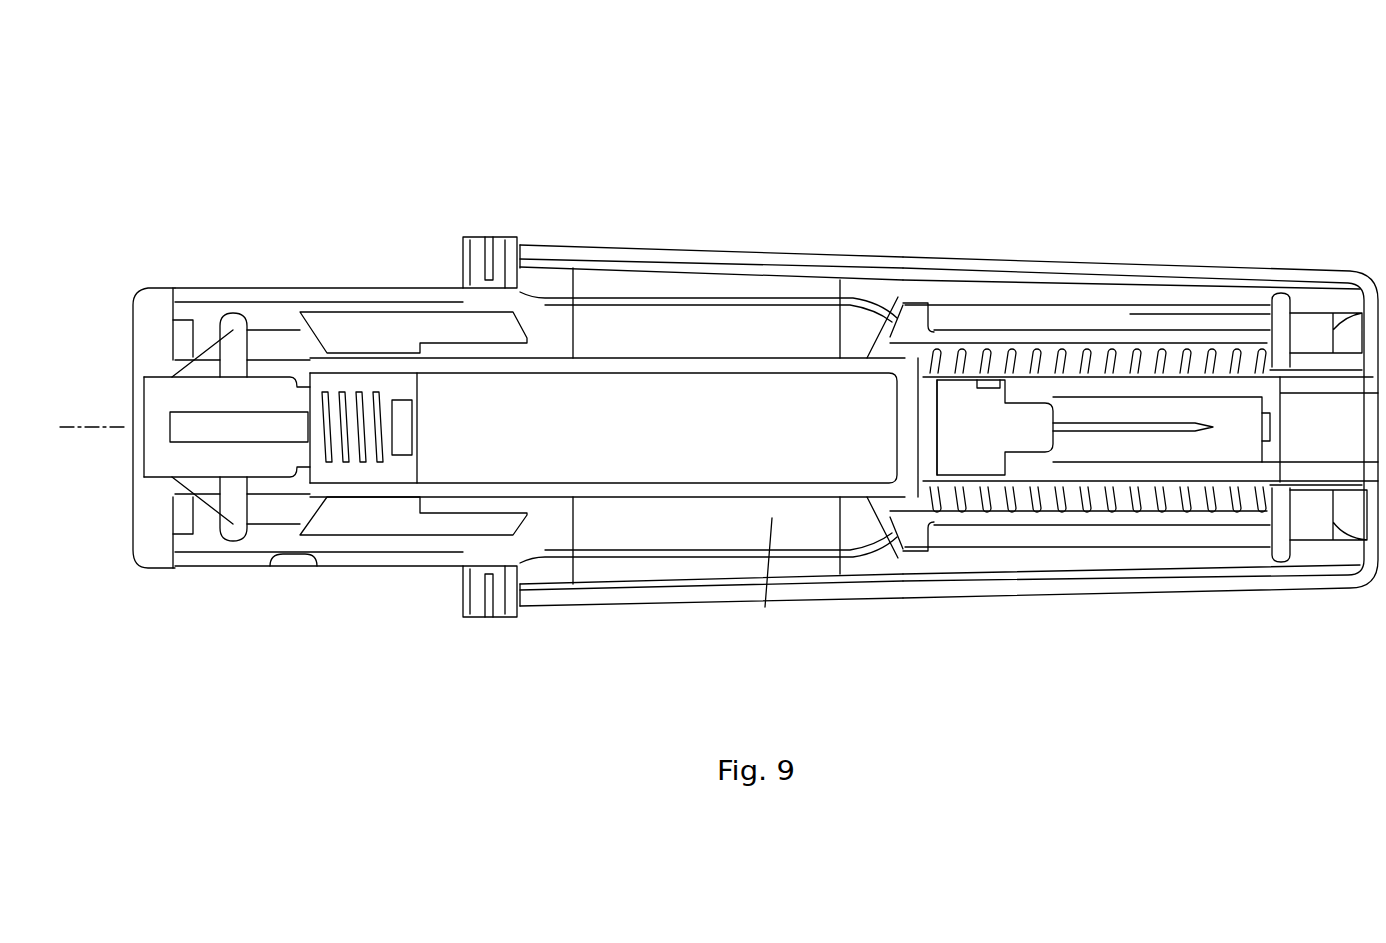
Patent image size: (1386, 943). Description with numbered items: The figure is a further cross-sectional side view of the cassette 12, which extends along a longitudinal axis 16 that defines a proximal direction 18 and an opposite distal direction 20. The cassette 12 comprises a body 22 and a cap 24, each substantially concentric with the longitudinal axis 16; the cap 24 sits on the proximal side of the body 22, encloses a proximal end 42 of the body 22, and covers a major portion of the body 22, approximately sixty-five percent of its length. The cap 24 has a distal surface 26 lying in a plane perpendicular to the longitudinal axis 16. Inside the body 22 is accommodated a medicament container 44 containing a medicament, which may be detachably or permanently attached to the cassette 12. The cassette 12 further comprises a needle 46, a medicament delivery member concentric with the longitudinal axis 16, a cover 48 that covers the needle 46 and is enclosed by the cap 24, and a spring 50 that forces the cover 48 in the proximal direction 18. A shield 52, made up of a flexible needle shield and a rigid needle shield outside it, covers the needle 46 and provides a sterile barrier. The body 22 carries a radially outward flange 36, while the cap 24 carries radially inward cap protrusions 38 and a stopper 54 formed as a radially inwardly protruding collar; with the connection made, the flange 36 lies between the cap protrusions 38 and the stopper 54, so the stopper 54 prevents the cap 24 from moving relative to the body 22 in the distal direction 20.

The cassette 12 is at (293, 116).
The longitudinal axis 16 is at (75, 427).
The proximal direction 18 is at (279, 734).
The distal direction 20 is at (287, 673).
The body 22 is at (300, 288).
The cap 24 is at (763, 263).
The distal surface 26 is at (462, 600).
The flange 36 is at (489, 251).
The cap protrusion 38 is at (467, 285).
The proximal end 42 is at (1090, 293).
The medicament container 44 is at (643, 435).
The needle 46 is at (1143, 423).
The cover 48 is at (1280, 305).
The spring 50 is at (943, 347).
The shield 52 is at (1108, 357).
The stopper 54 is at (513, 247).